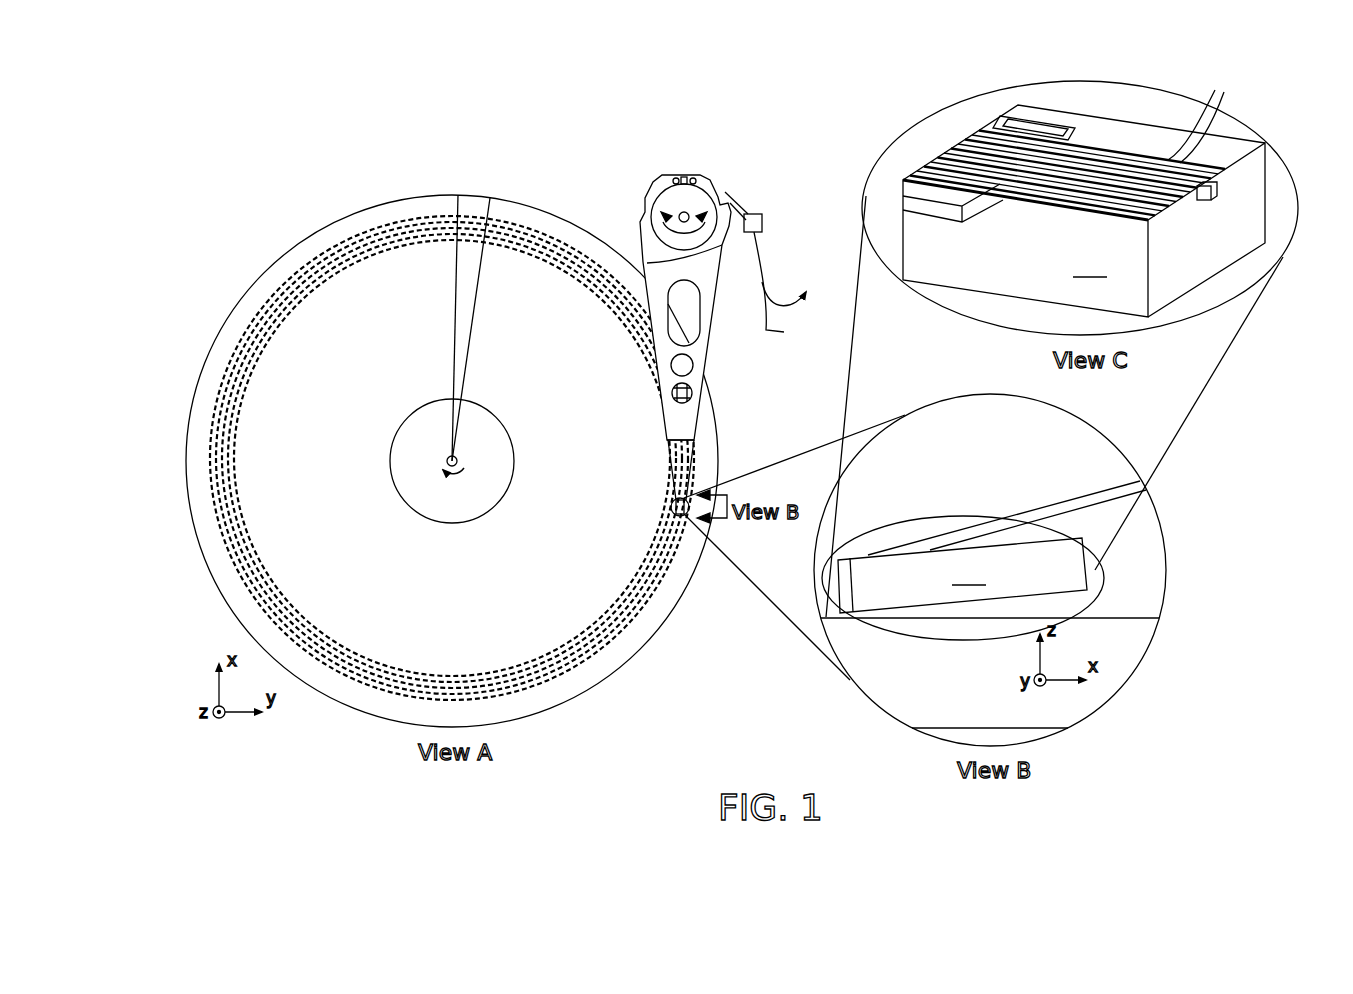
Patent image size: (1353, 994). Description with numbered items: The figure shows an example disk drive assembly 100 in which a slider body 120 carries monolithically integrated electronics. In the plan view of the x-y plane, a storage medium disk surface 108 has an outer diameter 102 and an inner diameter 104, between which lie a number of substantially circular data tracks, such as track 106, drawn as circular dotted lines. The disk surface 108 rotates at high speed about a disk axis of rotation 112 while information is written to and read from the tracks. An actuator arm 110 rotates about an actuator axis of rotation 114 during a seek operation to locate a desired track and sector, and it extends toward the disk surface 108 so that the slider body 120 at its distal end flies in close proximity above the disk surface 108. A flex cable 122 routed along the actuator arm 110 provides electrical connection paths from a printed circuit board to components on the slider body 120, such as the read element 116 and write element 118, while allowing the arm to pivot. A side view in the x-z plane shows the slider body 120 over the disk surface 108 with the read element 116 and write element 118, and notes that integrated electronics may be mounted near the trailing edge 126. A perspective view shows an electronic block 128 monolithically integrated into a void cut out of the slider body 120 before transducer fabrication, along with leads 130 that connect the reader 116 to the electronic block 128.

The disk drive assembly 100 is at (292, 123).
The outer diameter 102 is at (512, 211).
The inner diameter 104 is at (447, 400).
The data track 106 is at (352, 235).
The disk surface 108 is at (466, 605).
The actuator arm 110 is at (714, 356).
The disk axis of rotation 112 is at (457, 465).
The actuator axis of rotation 114 is at (682, 215).
The read element 116 is at (878, 597).
The write element 118 is at (851, 578).
The slider body 120 is at (968, 359).
The flex cable 122 is at (785, 332).
The trailing edge 126 is at (802, 638).
The electronic block 128 is at (950, 220).
The leads 130 is at (1216, 122).